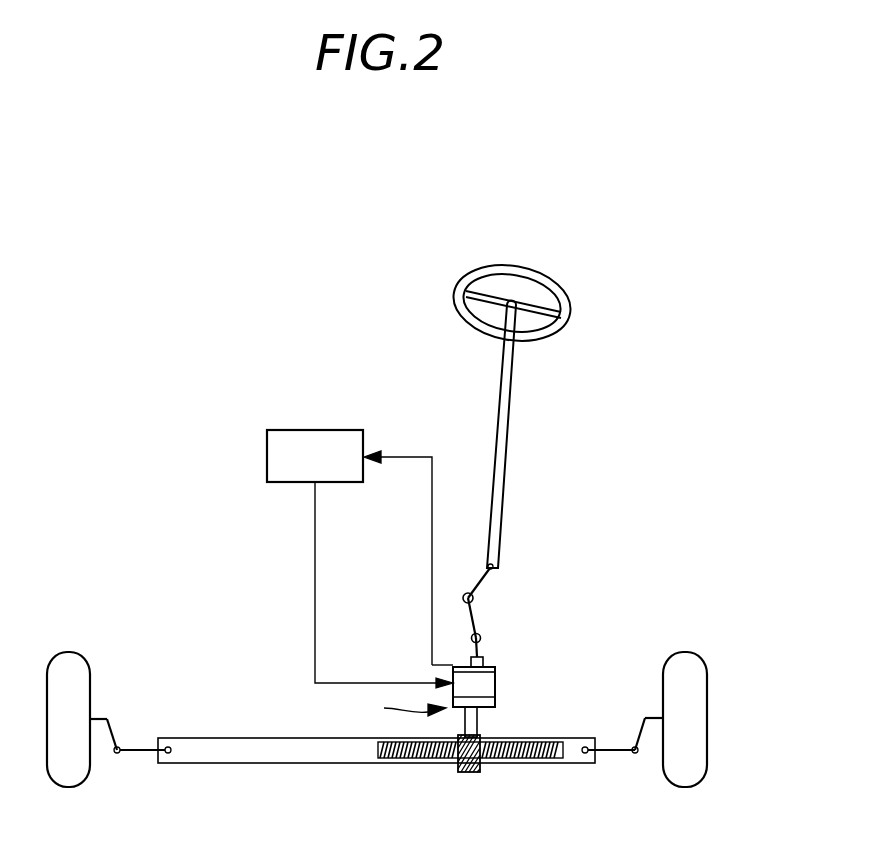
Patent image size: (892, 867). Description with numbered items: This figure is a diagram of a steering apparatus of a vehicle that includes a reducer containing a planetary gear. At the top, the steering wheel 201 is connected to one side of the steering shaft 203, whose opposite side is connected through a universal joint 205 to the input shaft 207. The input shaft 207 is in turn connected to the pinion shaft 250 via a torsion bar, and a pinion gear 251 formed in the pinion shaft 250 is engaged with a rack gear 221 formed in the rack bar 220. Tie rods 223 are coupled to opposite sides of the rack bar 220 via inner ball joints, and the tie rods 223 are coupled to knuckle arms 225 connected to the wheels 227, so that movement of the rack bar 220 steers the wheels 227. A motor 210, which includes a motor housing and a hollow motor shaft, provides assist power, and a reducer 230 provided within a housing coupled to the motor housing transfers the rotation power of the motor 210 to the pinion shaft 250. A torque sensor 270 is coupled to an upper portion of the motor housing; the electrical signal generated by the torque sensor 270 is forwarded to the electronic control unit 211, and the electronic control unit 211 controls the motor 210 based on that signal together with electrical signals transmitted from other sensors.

The steering wheel 201 is at (457, 290).
The steering shaft 203 is at (511, 398).
The universal joint 205 is at (480, 585).
The input shaft 207 is at (485, 658).
The torque sensor 270 is at (503, 668).
The motor 210 is at (497, 683).
The electronic control unit 211 is at (320, 428).
The rack bar 220 is at (275, 758).
The rack gear 221 is at (533, 759).
The tie rods 223 is at (139, 748).
The knuckle arms 225 is at (658, 717).
The wheels 227 is at (73, 662).
The reducer 230 is at (396, 710).
The pinion shaft 250 is at (478, 720).
The pinion gear 251 is at (465, 772).